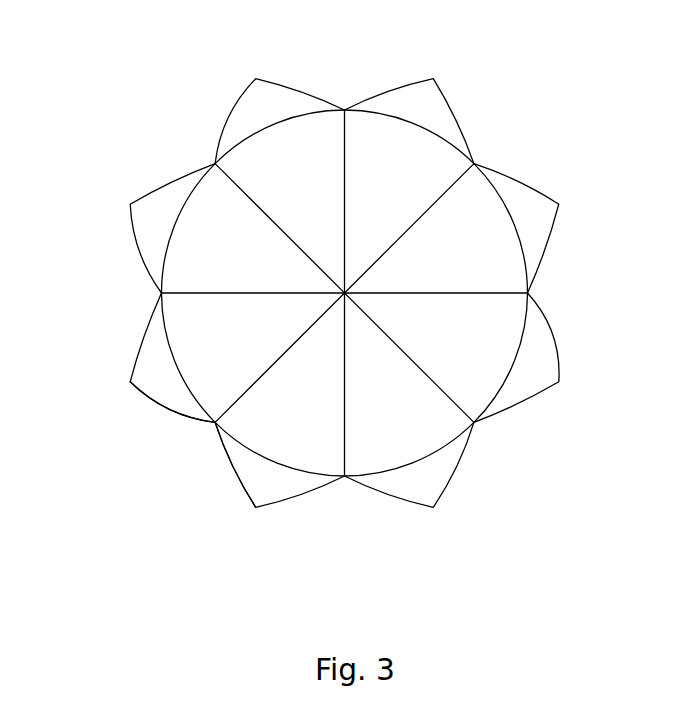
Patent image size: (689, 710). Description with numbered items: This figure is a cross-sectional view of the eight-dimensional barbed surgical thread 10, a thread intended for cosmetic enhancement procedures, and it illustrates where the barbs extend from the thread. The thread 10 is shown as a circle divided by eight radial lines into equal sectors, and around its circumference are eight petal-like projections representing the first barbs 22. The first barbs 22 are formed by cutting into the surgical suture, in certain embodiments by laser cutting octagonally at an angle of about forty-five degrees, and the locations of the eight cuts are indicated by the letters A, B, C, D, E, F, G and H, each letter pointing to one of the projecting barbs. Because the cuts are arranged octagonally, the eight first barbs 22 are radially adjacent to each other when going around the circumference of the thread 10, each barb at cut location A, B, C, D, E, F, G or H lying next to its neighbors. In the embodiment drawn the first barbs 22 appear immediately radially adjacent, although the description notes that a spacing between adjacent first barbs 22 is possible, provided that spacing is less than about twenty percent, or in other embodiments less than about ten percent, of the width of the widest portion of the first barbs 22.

The eight-dimensional barbed surgical thread 10 is at (164, 109).
The first barbs 22 is at (180, 445).
The cut location A is at (267, 482).
The cut location B is at (155, 378).
The cut location C is at (157, 223).
The cut location D is at (260, 108).
The cut location E is at (415, 105).
The cut location F is at (535, 215).
The cut location G is at (537, 375).
The cut location H is at (418, 482).